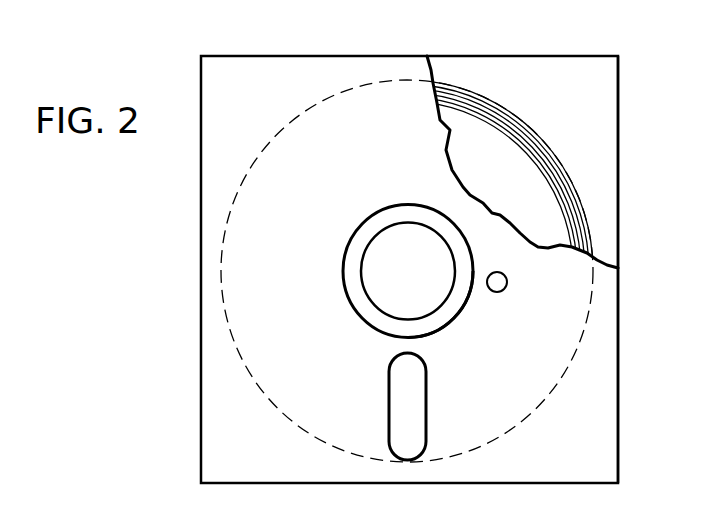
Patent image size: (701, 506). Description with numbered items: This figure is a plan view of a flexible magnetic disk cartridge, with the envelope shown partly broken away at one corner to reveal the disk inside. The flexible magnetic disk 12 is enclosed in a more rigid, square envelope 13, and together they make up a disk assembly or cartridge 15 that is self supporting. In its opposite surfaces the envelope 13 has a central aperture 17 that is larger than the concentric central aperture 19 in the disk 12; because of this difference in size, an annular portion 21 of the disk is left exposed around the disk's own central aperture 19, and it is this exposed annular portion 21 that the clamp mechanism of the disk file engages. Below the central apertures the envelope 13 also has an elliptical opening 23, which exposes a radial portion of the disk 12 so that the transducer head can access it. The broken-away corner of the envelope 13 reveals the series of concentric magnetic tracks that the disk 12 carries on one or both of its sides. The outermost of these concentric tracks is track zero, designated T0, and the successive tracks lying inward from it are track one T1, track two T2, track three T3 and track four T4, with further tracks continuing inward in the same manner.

The flexible magnetic disk 12 is at (453, 78).
The envelope 13 is at (289, 56).
The disk assembly or cartridge 15 is at (633, 77).
The central aperture 17 is at (349, 275).
The central aperture 19 is at (380, 305).
The annular portion 21 is at (450, 312).
The elliptical opening 23 is at (393, 407).
The track zero T0 is at (478, 100).
The track one T1 is at (507, 118).
The track two T2 is at (525, 137).
The track three T3 is at (545, 157).
The track four T4 is at (567, 180).